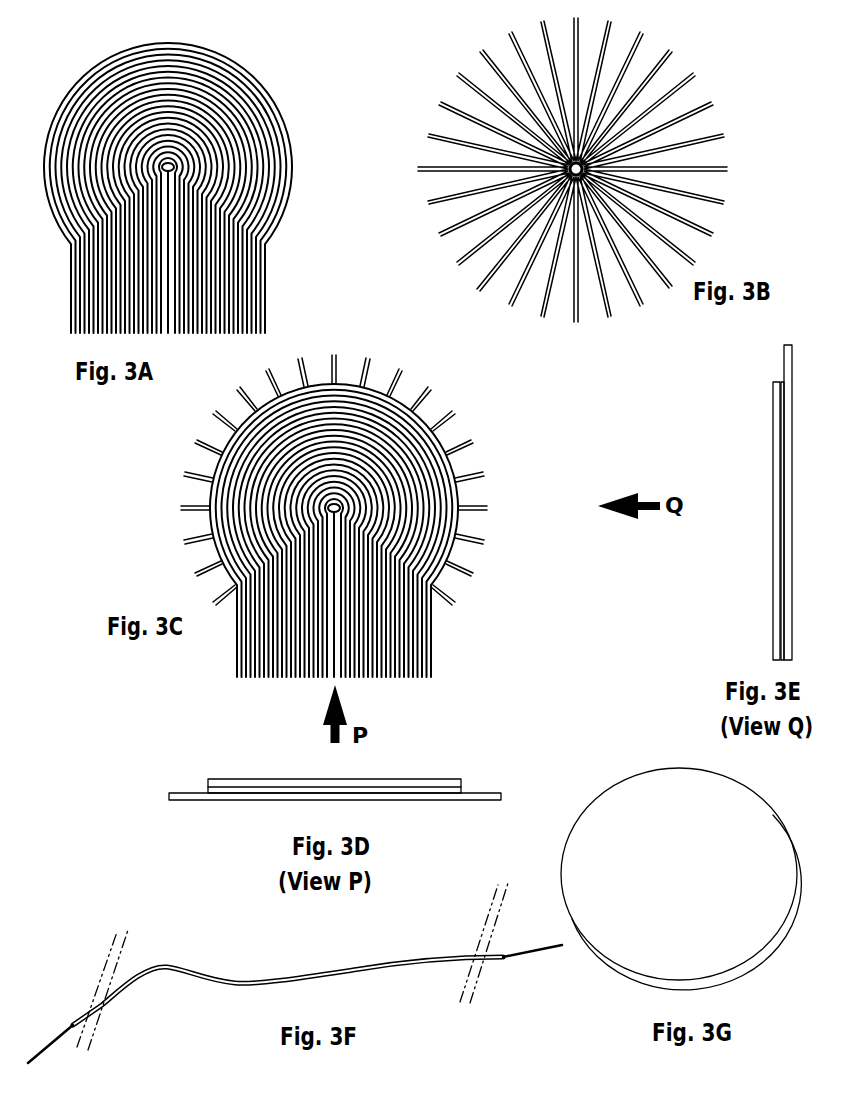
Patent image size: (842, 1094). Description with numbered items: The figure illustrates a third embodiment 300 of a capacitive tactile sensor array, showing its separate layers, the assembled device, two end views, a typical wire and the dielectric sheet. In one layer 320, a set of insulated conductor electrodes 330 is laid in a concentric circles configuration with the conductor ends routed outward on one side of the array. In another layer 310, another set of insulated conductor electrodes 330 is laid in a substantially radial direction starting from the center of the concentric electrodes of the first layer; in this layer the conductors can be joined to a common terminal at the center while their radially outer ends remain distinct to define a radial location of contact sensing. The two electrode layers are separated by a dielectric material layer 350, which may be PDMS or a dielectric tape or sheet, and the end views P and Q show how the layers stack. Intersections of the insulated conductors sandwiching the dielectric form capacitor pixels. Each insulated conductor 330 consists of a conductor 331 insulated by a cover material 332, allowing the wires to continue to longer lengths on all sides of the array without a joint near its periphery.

In FIG. 3C, the third embodiment 300 is at (325, 503).
In FIG. 3B, the layer 310 is at (456, 271).
In FIG. 3C, the layer 310 is at (433, 385).
In FIG. 3D, the layer 310 is at (217, 801).
In FIG. 3E, the layer 310 is at (783, 362).
In FIG. 3A, the layer 320 is at (290, 228).
In FIG. 3C, the layer 320 is at (583, 433).
In FIG. 3D, the layer 320 is at (217, 770).
In FIG. 3E, the layer 320 is at (773, 456).
In FIG. 3C, the insulated conductor electrodes 330 is at (486, 507).
In FIG. 3F, the insulated conductor electrodes 330 is at (168, 965).
In FIG. 3F, the conductors 331 is at (43, 1038).
In FIG. 3F, the cover material 332 is at (72, 1040).
In FIG. 3D, the dielectric material layer 350 is at (460, 792).
In FIG. 3G, the dielectric material layer 350 is at (773, 660).